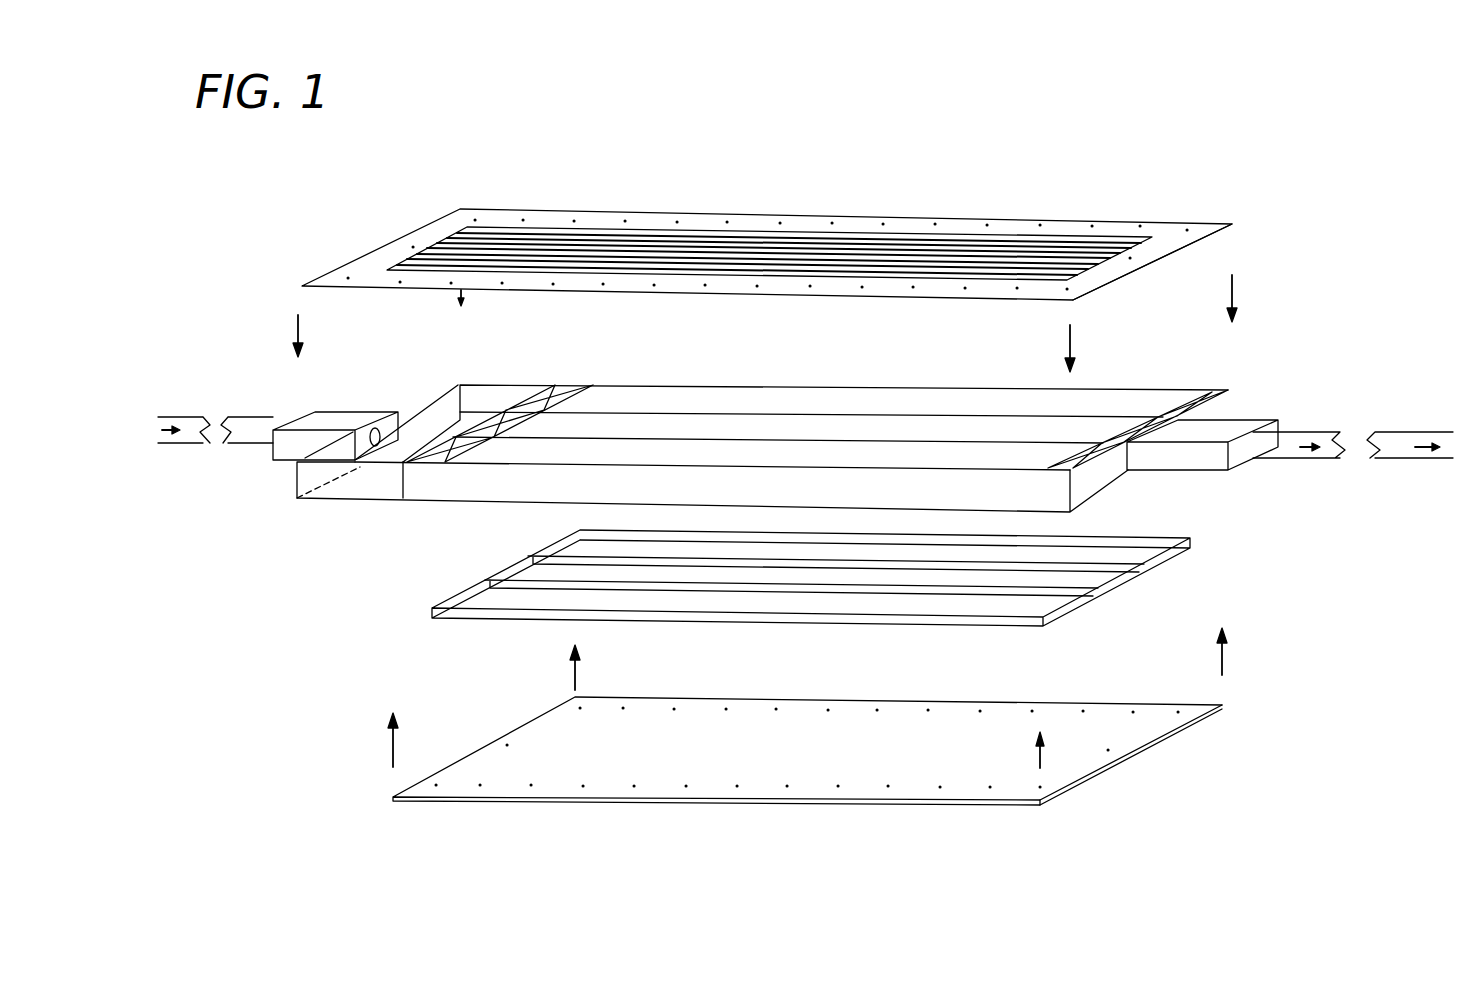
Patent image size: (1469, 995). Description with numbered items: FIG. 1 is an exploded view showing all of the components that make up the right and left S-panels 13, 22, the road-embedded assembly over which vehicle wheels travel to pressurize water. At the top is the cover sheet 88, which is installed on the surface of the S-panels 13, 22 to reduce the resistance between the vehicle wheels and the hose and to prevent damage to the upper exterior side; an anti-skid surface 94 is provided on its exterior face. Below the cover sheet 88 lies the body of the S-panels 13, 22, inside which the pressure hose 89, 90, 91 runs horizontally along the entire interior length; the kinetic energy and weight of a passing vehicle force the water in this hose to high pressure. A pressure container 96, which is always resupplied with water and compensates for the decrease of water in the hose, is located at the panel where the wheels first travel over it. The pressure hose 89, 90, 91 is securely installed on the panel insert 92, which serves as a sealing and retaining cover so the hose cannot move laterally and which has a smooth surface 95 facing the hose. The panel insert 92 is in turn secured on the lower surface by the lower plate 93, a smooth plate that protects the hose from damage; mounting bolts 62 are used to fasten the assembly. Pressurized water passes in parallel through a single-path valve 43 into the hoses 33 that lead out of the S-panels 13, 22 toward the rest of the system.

The right S-panel 13 is at (762, 428).
The left S-panel 22 is at (727, 384).
The pressure hoses 33 is at (256, 436).
The single-path valve 43 is at (378, 386).
The mounting bolt 62 is at (1135, 258).
The cover sheet 88 is at (535, 210).
The pressure hose, right 89 is at (808, 402).
The pressure hose, center 90 is at (808, 402).
The pressure hose, left 91 is at (968, 457).
The panel insert 92 is at (540, 598).
The lower plate 93 is at (628, 800).
The anti-skid surface 94 is at (789, 260).
The smooth surface 95 is at (790, 733).
The pressure container 96 is at (470, 417).